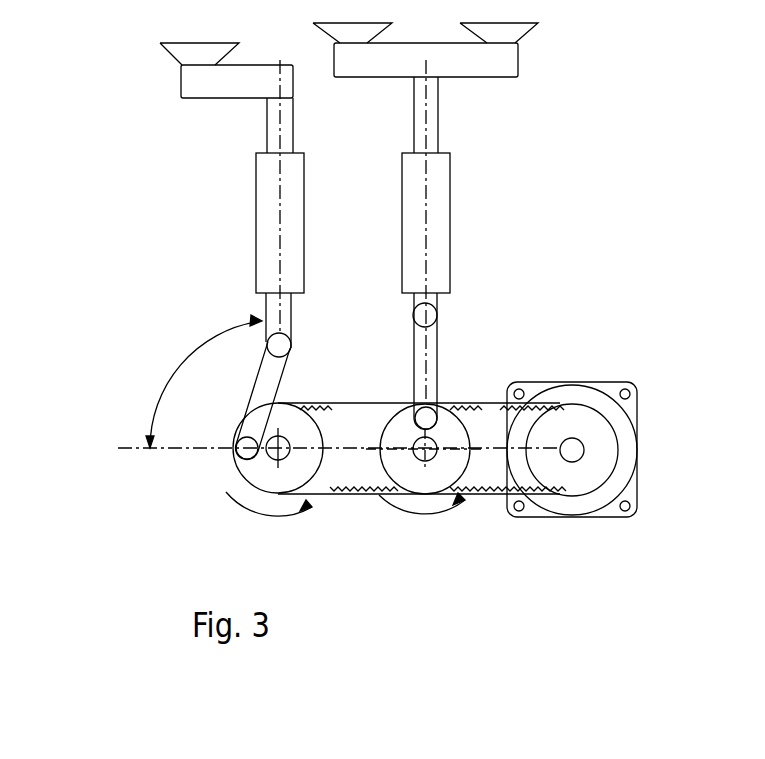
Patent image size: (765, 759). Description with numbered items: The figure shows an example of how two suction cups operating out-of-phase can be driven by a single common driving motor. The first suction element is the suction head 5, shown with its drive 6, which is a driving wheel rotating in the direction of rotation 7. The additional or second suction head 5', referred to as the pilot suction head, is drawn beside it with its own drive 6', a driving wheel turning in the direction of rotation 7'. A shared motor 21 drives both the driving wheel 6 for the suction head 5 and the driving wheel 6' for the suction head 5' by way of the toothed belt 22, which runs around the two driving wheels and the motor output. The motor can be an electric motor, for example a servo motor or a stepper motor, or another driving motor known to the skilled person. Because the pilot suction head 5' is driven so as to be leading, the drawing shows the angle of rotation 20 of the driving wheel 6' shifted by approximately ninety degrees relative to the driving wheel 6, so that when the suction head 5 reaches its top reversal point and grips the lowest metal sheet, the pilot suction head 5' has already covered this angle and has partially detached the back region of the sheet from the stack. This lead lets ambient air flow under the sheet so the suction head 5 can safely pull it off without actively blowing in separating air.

The suction head 5 is at (500, 158).
The second suction head 5' is at (178, 168).
The drive 6 is at (550, 317).
The drive 6' is at (174, 441).
The direction of rotation 7 is at (513, 492).
The direction of rotation 7' is at (298, 490).
The angle of rotation 20 is at (189, 355).
The shared motor 21 is at (576, 388).
The toothed belt 22 is at (482, 402).